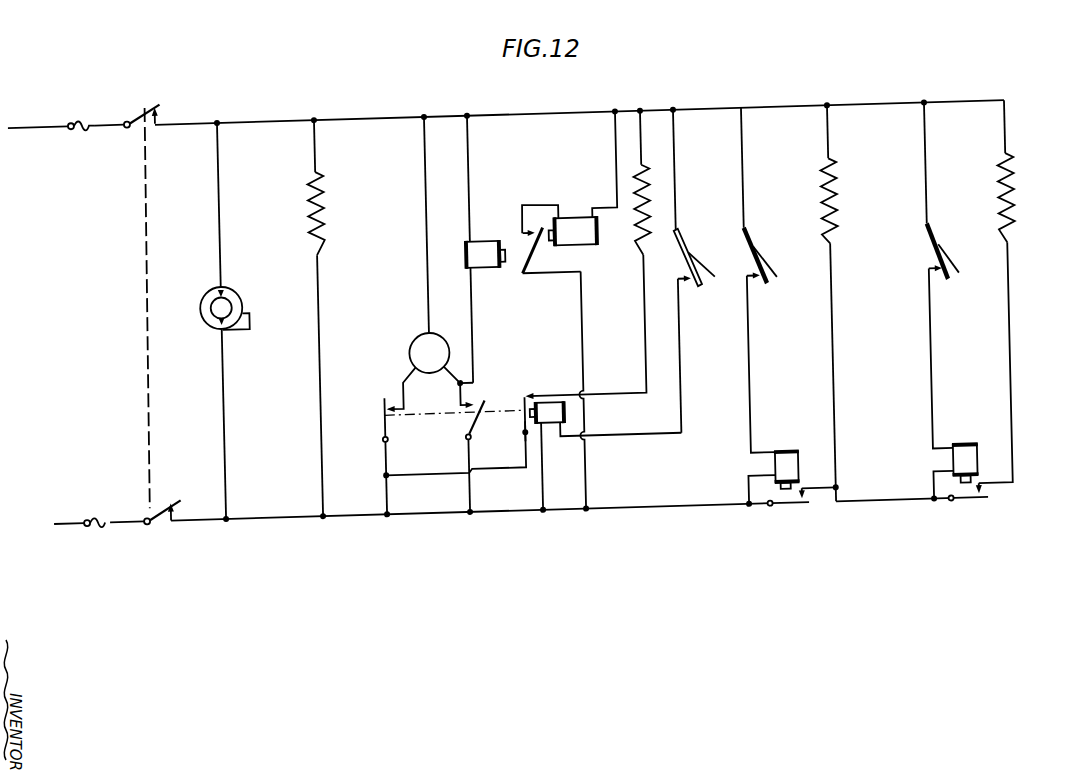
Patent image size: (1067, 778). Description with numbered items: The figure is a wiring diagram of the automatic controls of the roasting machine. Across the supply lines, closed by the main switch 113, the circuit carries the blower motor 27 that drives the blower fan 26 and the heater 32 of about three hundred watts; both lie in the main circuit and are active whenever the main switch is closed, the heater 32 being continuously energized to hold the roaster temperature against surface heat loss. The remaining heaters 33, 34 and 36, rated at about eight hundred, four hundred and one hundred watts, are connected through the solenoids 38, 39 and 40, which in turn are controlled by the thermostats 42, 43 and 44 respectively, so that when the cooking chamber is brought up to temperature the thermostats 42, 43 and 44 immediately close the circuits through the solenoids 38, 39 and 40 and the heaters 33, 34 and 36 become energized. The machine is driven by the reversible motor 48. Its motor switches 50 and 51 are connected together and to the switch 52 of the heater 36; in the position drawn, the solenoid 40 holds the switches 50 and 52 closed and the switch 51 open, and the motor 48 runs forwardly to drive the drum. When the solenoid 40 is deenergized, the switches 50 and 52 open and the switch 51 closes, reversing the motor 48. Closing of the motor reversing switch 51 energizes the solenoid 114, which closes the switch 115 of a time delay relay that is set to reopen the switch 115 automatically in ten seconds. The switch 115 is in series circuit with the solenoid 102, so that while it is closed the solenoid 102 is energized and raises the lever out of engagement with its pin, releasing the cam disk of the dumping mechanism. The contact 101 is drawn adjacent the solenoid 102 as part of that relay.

The blower fan 26 is at (243, 297).
The motor 27 is at (219, 298).
The heater 32 is at (322, 253).
The heater 33 is at (1015, 246).
The heater 34 is at (838, 248).
The heater 36 is at (648, 213).
The solenoid 38 is at (957, 485).
The solenoid 39 is at (787, 482).
The solenoid 40 is at (547, 424).
The thermostat 42 is at (935, 264).
The thermostat 43 is at (754, 268).
The thermostat 44 is at (688, 267).
The reversible motor 48 is at (435, 333).
The motor switch 50 is at (378, 420).
The motor reversing switch 51 is at (481, 408).
The switch 52 is at (517, 434).
The relay contact 101 is at (546, 250).
The solenoid 102 is at (575, 229).
The main switch 113 is at (142, 257).
The solenoid 114 is at (481, 250).
The switch 115 is at (524, 264).